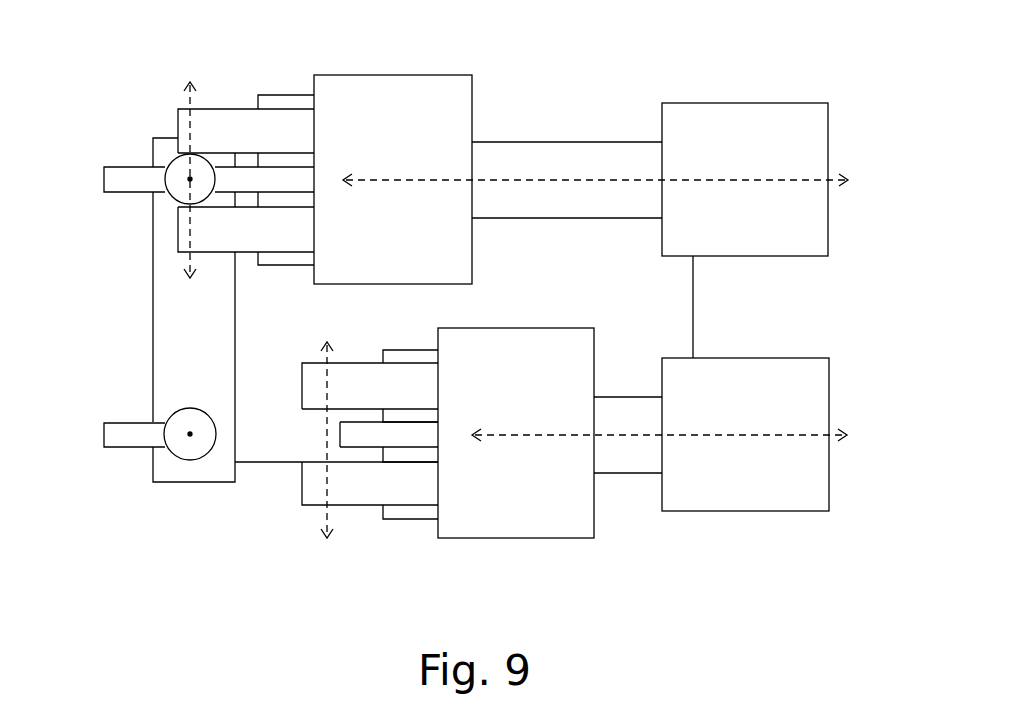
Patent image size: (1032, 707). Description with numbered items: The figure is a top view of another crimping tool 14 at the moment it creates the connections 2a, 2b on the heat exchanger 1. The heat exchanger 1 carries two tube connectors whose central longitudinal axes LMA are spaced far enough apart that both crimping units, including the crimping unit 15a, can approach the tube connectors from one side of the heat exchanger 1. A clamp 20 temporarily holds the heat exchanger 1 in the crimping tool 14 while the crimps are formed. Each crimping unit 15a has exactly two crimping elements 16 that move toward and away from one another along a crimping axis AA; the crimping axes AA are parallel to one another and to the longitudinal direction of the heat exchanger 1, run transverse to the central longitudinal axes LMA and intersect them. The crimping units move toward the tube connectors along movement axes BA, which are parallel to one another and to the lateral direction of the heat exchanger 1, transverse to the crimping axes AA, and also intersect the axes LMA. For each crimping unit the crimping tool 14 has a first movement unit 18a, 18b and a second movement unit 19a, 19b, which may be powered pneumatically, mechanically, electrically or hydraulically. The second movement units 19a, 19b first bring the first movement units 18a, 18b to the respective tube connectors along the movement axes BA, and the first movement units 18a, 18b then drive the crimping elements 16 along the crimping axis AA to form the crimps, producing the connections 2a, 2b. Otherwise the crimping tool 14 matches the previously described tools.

The heat exchanger 1 is at (152, 307).
The connection 2a is at (152, 151).
The connection 2b is at (168, 460).
The clamp 20 is at (125, 182).
The crimping element 16 is at (272, 225).
The first movement unit 18a is at (388, 103).
The first movement unit 18b is at (520, 520).
The second movement unit 19a is at (763, 117).
The second movement unit 19b is at (740, 490).
The crimping unit 15a is at (492, 80).
The crimping tool 14 is at (673, 77).
The crimping axis AA is at (186, 100).
The movement axis BA is at (545, 170).
The central longitudinal axis LMA is at (187, 180).